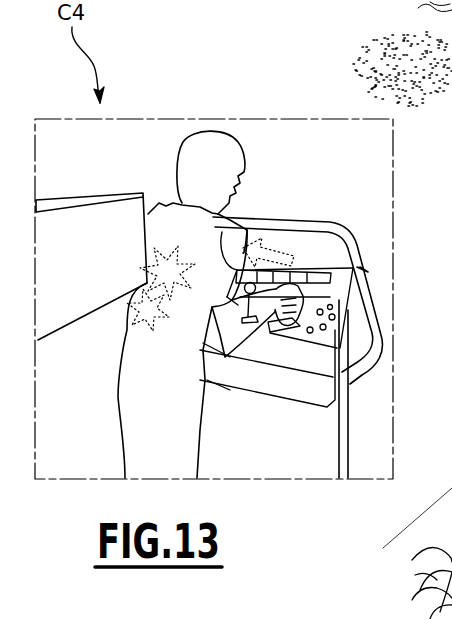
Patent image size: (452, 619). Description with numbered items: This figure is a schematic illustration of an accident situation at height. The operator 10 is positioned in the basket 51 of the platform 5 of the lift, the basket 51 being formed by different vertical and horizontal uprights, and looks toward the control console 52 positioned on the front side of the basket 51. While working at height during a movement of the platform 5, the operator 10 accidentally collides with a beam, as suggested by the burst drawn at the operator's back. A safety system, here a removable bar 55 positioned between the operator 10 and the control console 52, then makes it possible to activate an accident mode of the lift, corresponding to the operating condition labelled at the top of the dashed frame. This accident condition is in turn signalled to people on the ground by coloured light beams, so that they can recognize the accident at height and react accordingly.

The platform 5 is at (326, 318).
The operator 10 is at (185, 437).
The basket 51 is at (352, 243).
The control console 52 is at (322, 302).
The removable bar 55 is at (296, 300).